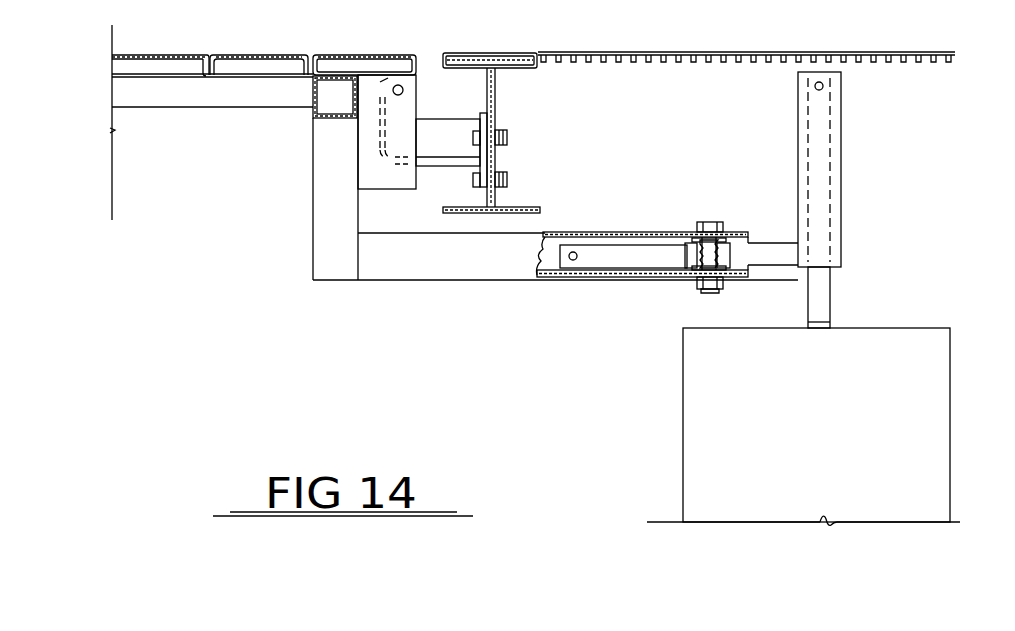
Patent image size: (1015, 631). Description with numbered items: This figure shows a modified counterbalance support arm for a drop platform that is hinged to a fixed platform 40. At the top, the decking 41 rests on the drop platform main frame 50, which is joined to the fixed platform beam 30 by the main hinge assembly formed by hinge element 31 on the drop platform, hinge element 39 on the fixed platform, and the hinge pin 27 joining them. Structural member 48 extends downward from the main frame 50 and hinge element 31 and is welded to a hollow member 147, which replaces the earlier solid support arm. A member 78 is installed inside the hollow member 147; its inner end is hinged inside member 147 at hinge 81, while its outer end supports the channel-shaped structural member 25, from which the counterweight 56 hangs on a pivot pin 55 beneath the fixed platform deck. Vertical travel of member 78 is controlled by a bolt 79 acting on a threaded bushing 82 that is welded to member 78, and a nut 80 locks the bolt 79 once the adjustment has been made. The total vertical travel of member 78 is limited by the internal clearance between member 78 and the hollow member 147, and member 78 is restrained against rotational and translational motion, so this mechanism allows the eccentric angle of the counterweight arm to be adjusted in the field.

The structural member 25 is at (840, 176).
The hinge pin 27 is at (403, 87).
The beam 30 is at (505, 70).
The hinge element 31 is at (416, 191).
The hinge element 39 is at (445, 118).
The fixed platform 40 is at (676, 52).
The decking 41 is at (195, 54).
The structural member 48 is at (313, 229).
The main frame 50 is at (308, 116).
The pivot pin 55 is at (818, 92).
The counterweight 56 is at (683, 401).
The member 78 is at (645, 272).
The bolt 79 is at (712, 222).
The nut 80 is at (723, 286).
The hinge 81 is at (580, 265).
The threaded bushing 82 is at (718, 258).
The hollow member 147 is at (396, 285).